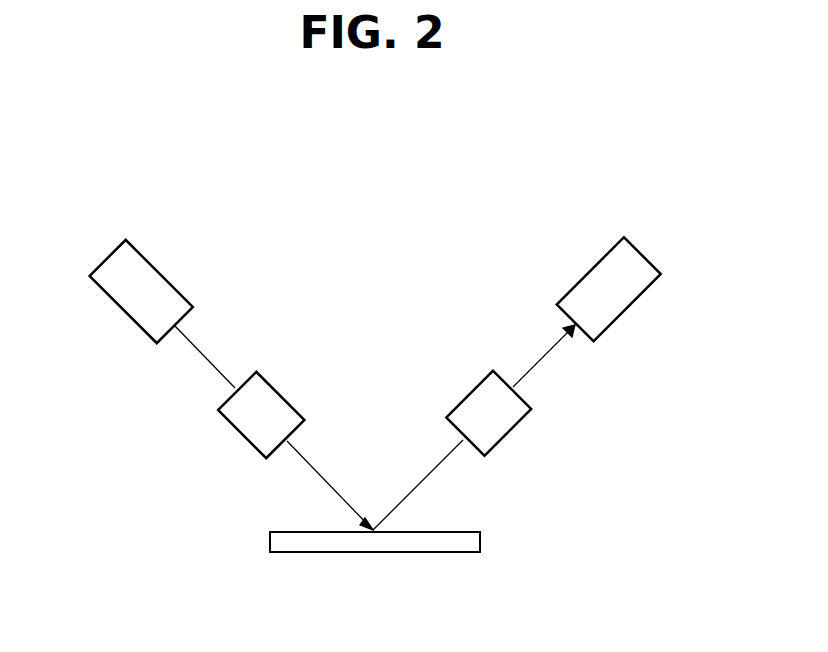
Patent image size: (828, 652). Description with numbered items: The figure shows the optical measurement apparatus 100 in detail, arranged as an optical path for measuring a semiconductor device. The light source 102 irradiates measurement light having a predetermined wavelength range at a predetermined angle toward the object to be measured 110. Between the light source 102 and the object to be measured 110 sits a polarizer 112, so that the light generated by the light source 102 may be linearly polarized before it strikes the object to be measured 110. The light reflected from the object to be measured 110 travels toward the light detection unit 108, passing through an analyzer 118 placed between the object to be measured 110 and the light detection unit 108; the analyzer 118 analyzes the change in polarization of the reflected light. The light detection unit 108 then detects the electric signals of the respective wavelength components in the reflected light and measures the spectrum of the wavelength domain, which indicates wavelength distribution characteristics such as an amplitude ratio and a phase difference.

The optical measurement apparatus 100 is at (355, 163).
The light source 102 is at (118, 313).
The polarizer 112 is at (240, 433).
The object to be measured 110 is at (373, 552).
The analyzer 118 is at (510, 432).
The light detection unit 108 is at (630, 310).